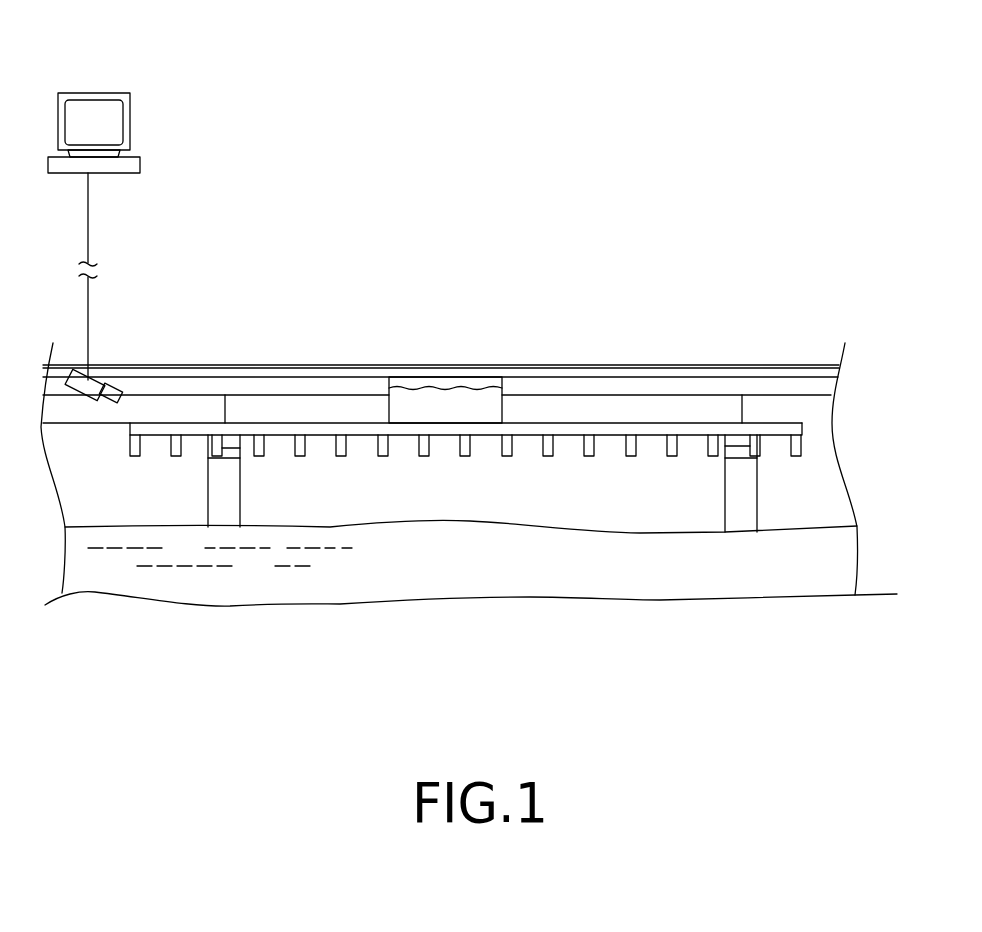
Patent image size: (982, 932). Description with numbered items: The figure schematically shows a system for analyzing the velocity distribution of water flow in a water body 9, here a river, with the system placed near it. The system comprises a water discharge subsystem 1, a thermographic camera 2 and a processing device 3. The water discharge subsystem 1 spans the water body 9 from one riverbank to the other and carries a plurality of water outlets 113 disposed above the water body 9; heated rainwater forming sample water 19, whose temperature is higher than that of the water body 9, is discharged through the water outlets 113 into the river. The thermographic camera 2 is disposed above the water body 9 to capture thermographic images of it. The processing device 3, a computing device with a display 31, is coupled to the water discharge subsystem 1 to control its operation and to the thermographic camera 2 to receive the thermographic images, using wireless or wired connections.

The water discharge subsystem 1 is at (488, 362).
The thermographic camera 2 is at (91, 383).
The processing device 3 is at (117, 93).
The display 31 is at (117, 122).
The sample water 19 is at (422, 394).
The water outlets 113 is at (424, 456).
The water body 9 is at (417, 562).